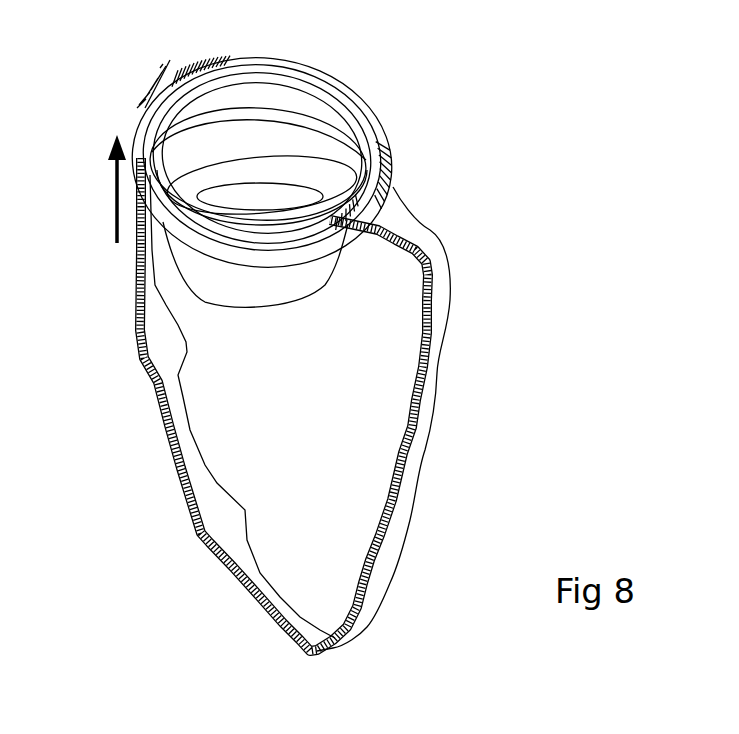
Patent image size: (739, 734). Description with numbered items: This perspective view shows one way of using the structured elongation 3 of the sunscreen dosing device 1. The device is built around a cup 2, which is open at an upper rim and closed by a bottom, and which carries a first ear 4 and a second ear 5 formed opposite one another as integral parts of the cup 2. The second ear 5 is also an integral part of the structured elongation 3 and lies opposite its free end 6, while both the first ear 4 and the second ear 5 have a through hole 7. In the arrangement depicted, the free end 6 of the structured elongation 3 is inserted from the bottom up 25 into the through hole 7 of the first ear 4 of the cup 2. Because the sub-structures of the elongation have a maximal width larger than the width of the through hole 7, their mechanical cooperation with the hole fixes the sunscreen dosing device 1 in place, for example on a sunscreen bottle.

The sunscreen dosing device 1 is at (502, 281).
The cup 2 is at (205, 268).
The structured elongation 3 is at (420, 420).
The first ear 4 is at (132, 93).
The second ear 5 is at (390, 174).
The free end 6 is at (163, 52).
The through hole 7 is at (188, 62).
The bottom up 25 is at (117, 196).